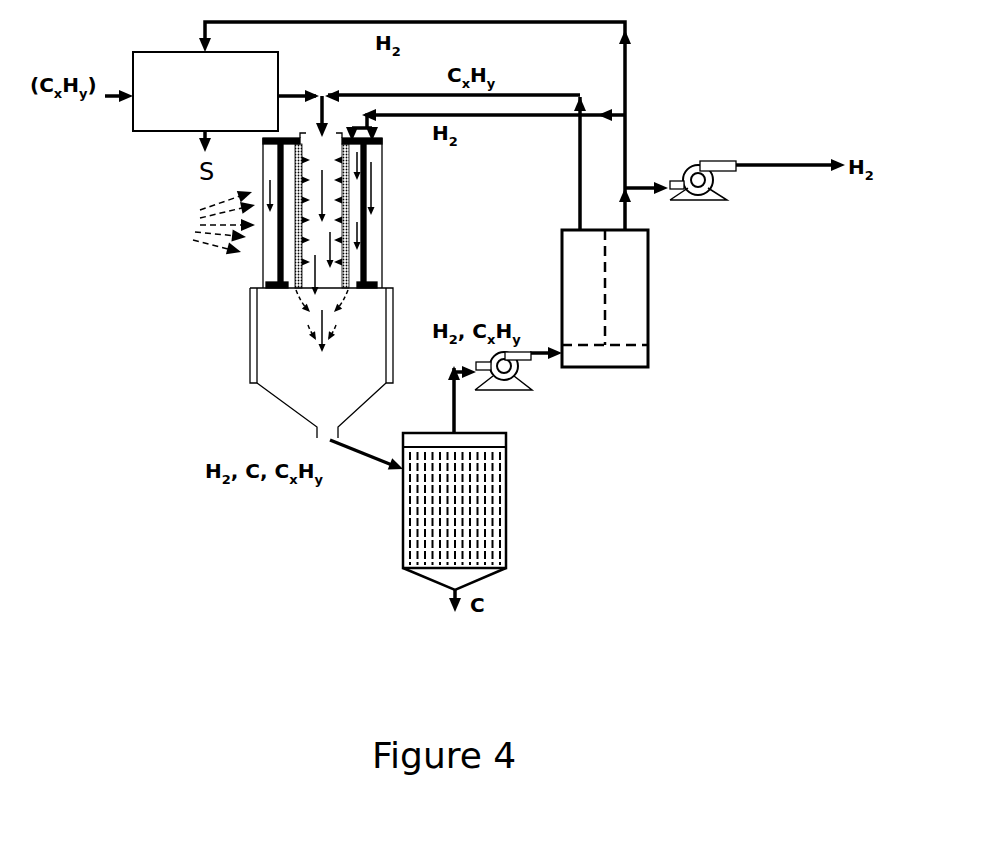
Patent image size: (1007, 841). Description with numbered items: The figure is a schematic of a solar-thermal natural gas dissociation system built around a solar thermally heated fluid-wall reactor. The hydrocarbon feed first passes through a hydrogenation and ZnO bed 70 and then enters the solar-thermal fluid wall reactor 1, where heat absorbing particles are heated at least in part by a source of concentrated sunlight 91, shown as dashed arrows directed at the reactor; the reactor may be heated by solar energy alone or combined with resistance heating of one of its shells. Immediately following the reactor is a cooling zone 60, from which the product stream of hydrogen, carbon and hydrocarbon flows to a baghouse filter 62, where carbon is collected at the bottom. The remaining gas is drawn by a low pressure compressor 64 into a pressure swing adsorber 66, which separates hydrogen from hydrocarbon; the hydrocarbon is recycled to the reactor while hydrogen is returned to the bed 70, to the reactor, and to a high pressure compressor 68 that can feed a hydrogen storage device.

The solar-thermal fluid wall reactor 1 is at (390, 237).
The cooling zone 60 is at (250, 318).
The baghouse filter 62 is at (403, 512).
The low pressure compressor 64 is at (503, 382).
The pressure swing adsorber 66 is at (648, 337).
The high pressure compressor 68 is at (703, 168).
The hydrogenation and ZnO bed 70 is at (205, 91).
The source of concentrated sunlight 91 is at (193, 221).